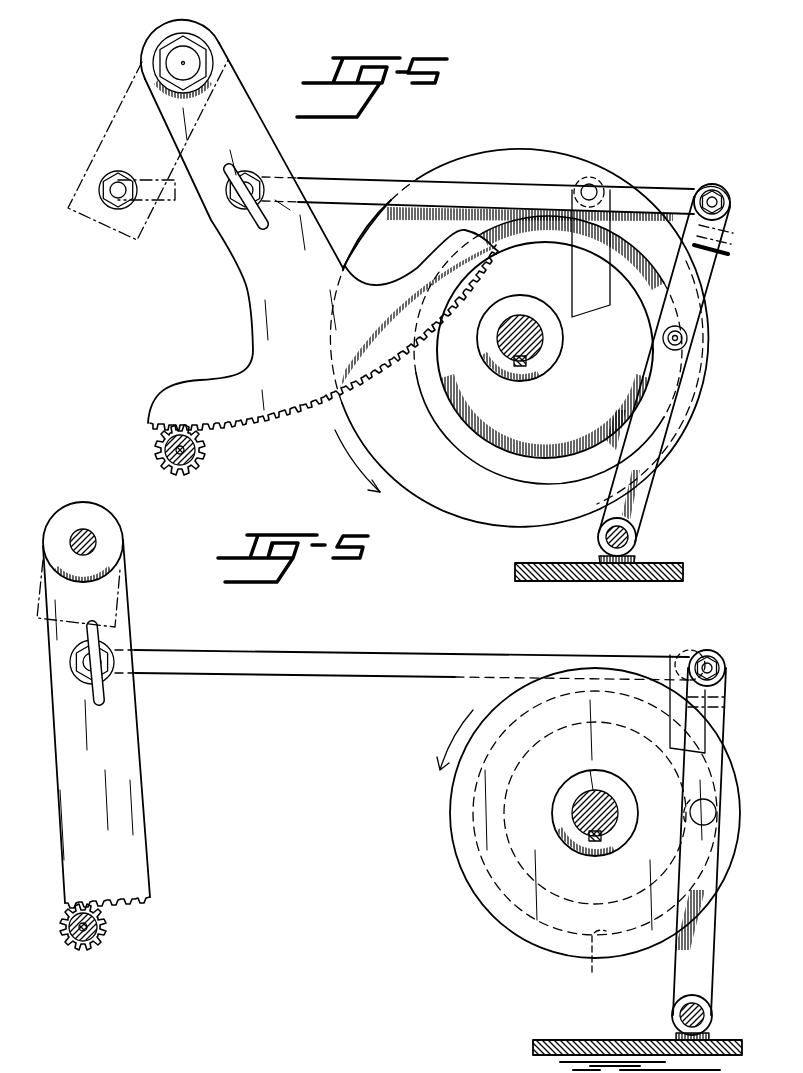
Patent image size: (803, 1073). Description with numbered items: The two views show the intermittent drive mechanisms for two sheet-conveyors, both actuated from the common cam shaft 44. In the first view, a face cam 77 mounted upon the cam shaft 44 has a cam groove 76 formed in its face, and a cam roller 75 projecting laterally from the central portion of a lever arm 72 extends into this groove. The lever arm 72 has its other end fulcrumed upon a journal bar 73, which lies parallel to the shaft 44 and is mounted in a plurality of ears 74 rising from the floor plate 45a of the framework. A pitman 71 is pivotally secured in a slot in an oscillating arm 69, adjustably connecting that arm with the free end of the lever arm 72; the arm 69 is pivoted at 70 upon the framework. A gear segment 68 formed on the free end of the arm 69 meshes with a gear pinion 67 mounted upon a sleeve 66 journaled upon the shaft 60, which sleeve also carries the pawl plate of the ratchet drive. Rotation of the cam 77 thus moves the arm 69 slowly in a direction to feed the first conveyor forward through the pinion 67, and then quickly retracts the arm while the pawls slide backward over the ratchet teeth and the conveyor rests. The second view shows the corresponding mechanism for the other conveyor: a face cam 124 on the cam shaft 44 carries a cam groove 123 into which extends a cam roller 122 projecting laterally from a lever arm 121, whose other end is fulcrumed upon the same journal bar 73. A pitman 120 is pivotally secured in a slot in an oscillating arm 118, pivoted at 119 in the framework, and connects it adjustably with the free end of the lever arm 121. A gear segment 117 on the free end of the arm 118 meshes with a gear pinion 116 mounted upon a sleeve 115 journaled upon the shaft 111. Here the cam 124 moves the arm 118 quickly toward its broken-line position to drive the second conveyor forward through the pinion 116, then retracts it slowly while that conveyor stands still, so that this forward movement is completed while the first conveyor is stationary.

In FIG. 5, the cam shaft 44 is at (514, 352).
In FIG. 6, the cam shaft 44 is at (588, 798).
In FIG. 5, the floor plate 45a is at (652, 582).
In FIG. 6, the floor plate 45a is at (600, 1027).
In FIG. 5, the shaft 60 is at (196, 462).
In FIG. 5, the sleeve 66 is at (162, 454).
In FIG. 5, the gear pinion 67 is at (197, 452).
In FIG. 5, the gear segment 68 is at (283, 403).
In FIG. 5, the oscillating arm 69 is at (245, 288).
In FIG. 5, the pivot 70 is at (188, 62).
In FIG. 5, the pitman 71 is at (354, 187).
In FIG. 5, the lever arm 72 is at (706, 278).
In FIG. 5, the journal bar 73 is at (630, 543).
In FIG. 6, the journal bar 73 is at (703, 1008).
In FIG. 5, the ears 74 is at (600, 561).
In FIG. 6, the ears 74 is at (709, 1036).
In FIG. 5, the cam roller 75 is at (662, 348).
In FIG. 5, the cam groove 76 is at (473, 462).
In FIG. 5, the face cam 77 is at (704, 372).
In FIG. 6, the shaft 111 is at (70, 938).
In FIG. 6, the sleeve 115 is at (95, 941).
In FIG. 6, the gear pinion 116 is at (105, 931).
In FIG. 6, the gear segment 117 is at (135, 902).
In FIG. 6, the oscillating arm 118 is at (135, 818).
In FIG. 6, the pivot 119 is at (98, 542).
In FIG. 6, the pitman 120 is at (253, 660).
In FIG. 6, the lever arm 121 is at (705, 960).
In FIG. 6, the cam roller 122 is at (690, 826).
In FIG. 6, the cam groove 123 is at (578, 964).
In FIG. 6, the face cam 124 is at (492, 900).